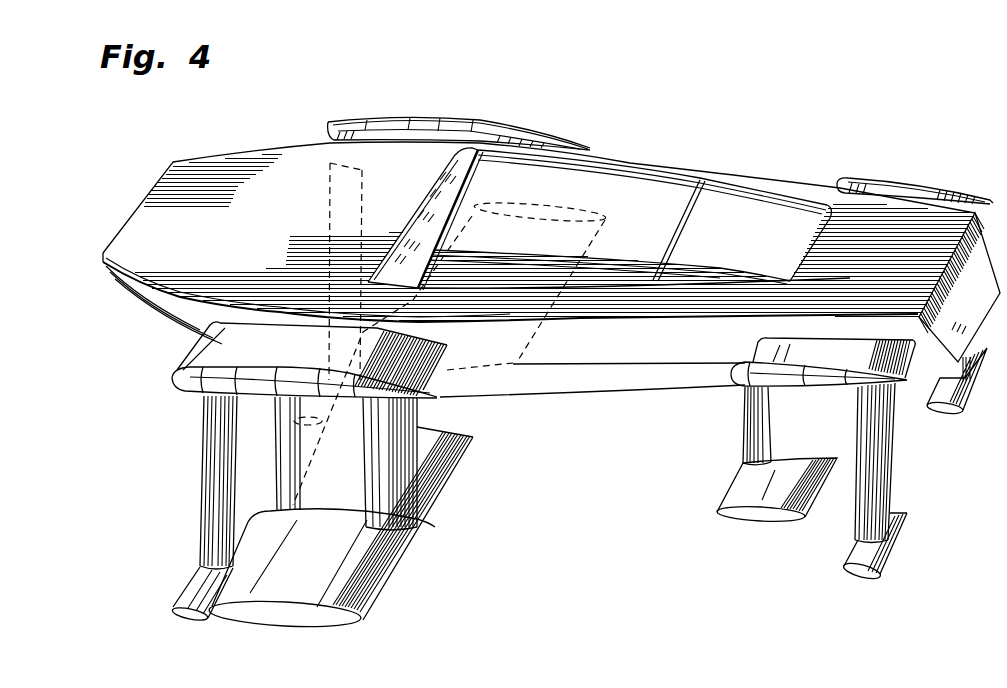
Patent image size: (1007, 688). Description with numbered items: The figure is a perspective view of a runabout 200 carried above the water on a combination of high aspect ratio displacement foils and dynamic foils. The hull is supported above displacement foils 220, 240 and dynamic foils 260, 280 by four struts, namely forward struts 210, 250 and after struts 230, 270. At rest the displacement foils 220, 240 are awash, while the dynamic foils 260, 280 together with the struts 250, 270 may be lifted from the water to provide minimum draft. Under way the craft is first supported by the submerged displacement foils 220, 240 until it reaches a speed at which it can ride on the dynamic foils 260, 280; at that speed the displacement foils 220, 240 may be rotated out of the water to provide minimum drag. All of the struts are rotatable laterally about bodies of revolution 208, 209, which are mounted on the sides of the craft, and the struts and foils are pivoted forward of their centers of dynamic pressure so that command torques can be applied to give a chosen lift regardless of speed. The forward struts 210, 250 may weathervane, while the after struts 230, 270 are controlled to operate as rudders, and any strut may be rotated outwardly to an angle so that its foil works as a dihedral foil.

The runabout 200 is at (575, 131).
The body of revolution 208 is at (257, 376).
The body of revolution 209 is at (824, 378).
The forward strut 210 is at (392, 450).
The high aspect ratio displacement foil 220 is at (368, 570).
The after strut 230 is at (762, 420).
The high aspect ratio displacement foil 240 is at (745, 490).
The forward strut 250 is at (215, 488).
The dynamic foil 260 is at (197, 595).
The after strut 270 is at (880, 456).
The dynamic foil 280 is at (882, 555).